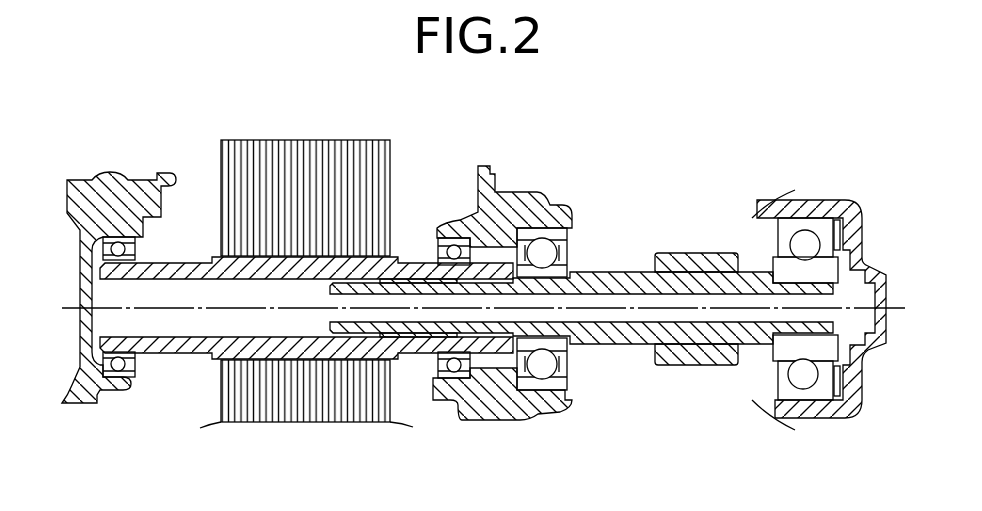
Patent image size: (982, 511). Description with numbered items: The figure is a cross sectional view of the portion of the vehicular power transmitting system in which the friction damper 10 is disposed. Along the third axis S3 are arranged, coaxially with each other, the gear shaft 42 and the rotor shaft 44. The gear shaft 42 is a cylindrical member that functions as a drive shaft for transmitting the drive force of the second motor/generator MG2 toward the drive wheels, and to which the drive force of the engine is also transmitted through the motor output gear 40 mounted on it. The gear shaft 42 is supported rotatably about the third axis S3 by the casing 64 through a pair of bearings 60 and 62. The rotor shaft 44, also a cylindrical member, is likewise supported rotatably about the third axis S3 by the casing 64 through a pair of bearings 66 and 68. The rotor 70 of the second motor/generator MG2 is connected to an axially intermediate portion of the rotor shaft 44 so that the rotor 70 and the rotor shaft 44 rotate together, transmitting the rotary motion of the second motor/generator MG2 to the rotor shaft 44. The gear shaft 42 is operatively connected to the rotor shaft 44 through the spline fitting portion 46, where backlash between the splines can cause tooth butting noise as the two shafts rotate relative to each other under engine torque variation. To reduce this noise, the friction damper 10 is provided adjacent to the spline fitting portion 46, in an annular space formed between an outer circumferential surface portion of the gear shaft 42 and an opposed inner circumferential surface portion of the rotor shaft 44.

The friction damper 10 is at (494, 343).
The motor output gear 40 is at (712, 258).
The gear shaft 42 is at (617, 335).
The rotor shaft 44 is at (179, 262).
The spline fitting portion 46 is at (410, 340).
The bearing 60 is at (548, 253).
The bearing 62 is at (806, 243).
The casing 64 is at (138, 184).
The bearing 66 is at (118, 363).
The bearing 68 is at (454, 250).
The rotor 70 is at (355, 140).
The second motor/generator MG2 is at (274, 118).
The third axis S3 is at (461, 305).